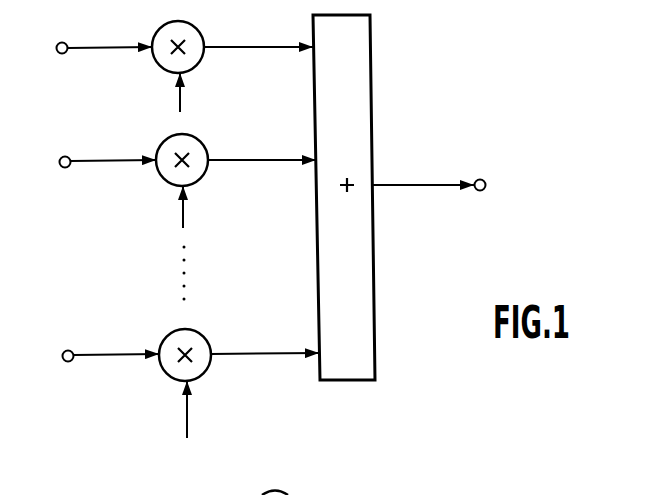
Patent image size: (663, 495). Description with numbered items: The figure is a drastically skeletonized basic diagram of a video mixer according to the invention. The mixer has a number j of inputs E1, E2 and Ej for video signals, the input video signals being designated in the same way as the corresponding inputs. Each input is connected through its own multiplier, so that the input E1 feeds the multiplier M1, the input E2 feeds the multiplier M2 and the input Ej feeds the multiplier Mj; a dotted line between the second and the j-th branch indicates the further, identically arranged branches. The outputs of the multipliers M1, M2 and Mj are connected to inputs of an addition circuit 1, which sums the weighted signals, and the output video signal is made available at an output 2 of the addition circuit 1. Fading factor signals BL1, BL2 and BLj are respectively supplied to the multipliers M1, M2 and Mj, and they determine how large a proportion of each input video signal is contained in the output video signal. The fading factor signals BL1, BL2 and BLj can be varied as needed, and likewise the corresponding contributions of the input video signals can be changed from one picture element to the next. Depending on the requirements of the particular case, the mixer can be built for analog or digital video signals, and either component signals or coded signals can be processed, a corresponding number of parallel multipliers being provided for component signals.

The addition circuit 1 is at (350, 193).
The output 2 is at (429, 169).
The first input E1 is at (97, 31).
The second input E2 is at (100, 144).
The j-th input Ej is at (101, 340).
The first multiplier M1 is at (232, 41).
The second multiplier M2 is at (236, 153).
The j-th multiplier Mj is at (239, 349).
The first fading factor signal BL1 is at (209, 92).
The second fading factor signal BL2 is at (214, 205).
The j-th fading factor signal BLj is at (215, 408).